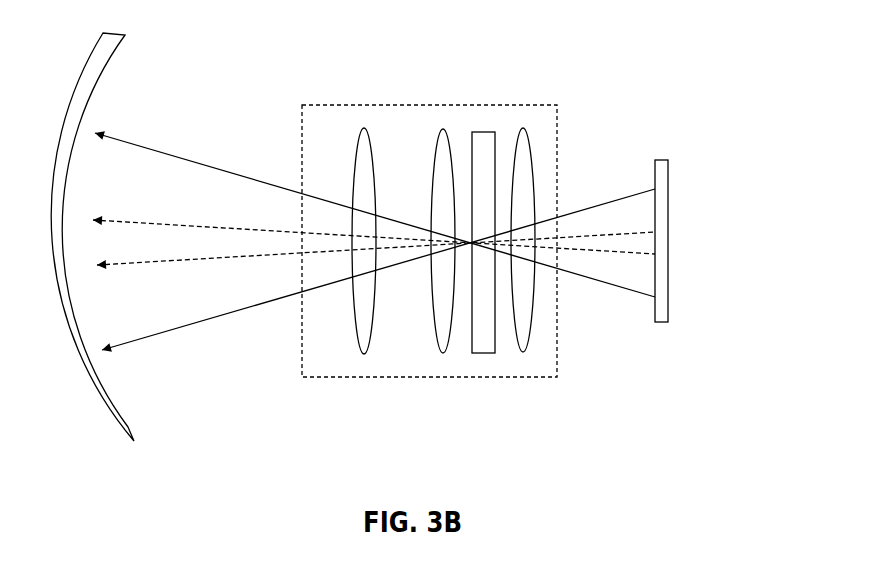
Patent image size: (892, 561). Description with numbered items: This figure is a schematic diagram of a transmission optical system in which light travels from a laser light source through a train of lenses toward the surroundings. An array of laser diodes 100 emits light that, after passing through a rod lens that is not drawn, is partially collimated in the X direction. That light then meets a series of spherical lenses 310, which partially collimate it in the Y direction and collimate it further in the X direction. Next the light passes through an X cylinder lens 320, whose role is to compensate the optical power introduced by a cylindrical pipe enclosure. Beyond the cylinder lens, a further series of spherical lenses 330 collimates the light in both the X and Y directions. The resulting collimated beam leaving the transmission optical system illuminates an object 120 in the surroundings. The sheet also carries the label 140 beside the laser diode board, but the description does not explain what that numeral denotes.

The object 120 is at (78, 237).
The series of spherical lenses 330 is at (427, 356).
The X cylinder lens 320 is at (483, 121).
The series of spherical lenses 310 is at (517, 364).
The array of laser diodes 100 is at (750, 241).
The avalanche photodiode (APD) 140 is at (747, 241).